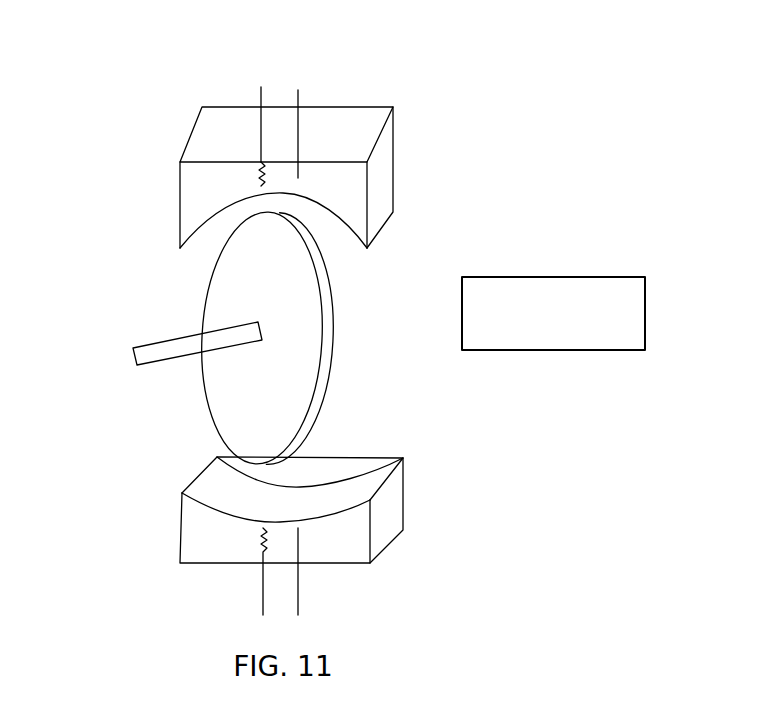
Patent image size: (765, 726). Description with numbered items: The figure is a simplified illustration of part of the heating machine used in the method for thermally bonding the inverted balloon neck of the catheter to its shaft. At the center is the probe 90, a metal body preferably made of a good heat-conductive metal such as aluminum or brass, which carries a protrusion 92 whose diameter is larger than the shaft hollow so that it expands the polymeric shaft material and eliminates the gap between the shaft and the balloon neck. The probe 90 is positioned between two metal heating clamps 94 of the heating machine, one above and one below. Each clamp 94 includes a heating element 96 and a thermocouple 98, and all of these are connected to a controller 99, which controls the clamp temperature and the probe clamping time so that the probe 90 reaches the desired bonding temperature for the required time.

The probe 90 is at (310, 327).
The protrusion 92 is at (137, 357).
The metal heating clamp 94 is at (188, 180).
The heating element 96 is at (257, 98).
The thermocouple 98 is at (300, 97).
The controller 99 is at (538, 277).